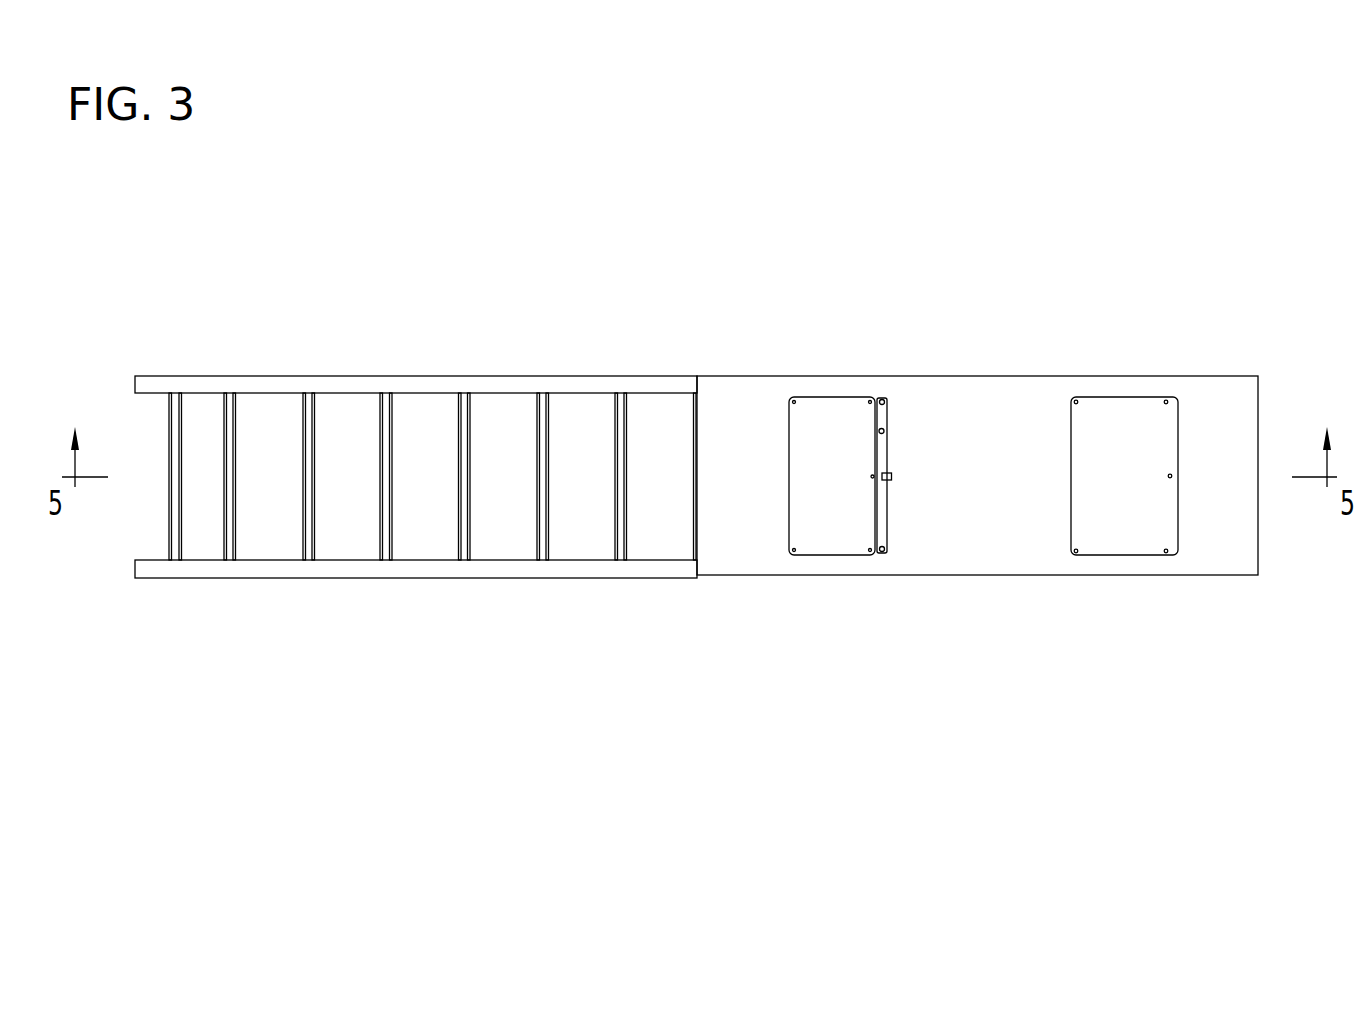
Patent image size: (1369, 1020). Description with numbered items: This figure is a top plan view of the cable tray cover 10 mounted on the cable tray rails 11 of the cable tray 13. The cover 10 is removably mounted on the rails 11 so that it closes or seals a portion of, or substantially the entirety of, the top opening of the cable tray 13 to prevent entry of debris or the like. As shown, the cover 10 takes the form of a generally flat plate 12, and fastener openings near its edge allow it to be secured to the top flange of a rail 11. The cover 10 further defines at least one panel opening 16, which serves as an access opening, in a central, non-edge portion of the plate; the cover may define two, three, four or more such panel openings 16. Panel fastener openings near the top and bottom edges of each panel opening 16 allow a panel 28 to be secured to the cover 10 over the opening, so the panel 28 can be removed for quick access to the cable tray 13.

The cable tray cover 10 is at (1042, 310).
The cable tray rails 11 is at (500, 567).
The flat plate 12 is at (982, 537).
The cable tray 13 is at (475, 374).
The panel opening 16 is at (884, 430).
The panel 28 is at (839, 534).